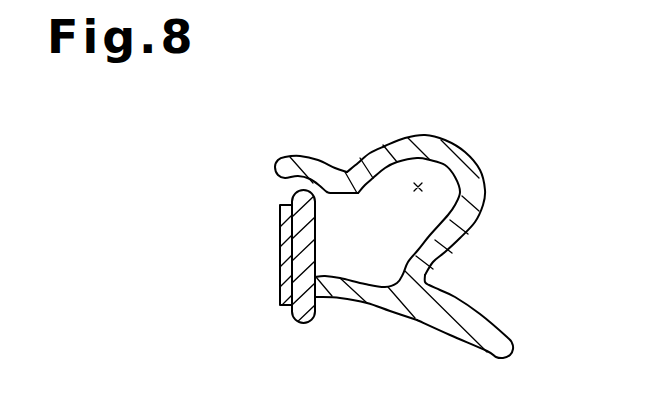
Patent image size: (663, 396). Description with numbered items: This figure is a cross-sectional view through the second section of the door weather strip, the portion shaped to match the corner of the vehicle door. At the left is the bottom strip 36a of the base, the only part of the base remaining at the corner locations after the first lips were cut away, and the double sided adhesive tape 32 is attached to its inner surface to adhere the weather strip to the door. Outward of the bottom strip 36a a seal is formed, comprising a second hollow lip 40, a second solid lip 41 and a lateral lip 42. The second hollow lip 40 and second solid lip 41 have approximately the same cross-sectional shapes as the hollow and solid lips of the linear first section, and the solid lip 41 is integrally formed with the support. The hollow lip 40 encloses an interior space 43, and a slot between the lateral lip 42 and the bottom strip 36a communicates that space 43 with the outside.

The second hollow lip 40 is at (486, 189).
The second solid lip 41 is at (501, 325).
The lateral lip 42 is at (313, 158).
The space 43 is at (424, 185).
The double sided adhesive tape 32 is at (280, 248).
The bottom strip 36a is at (308, 323).